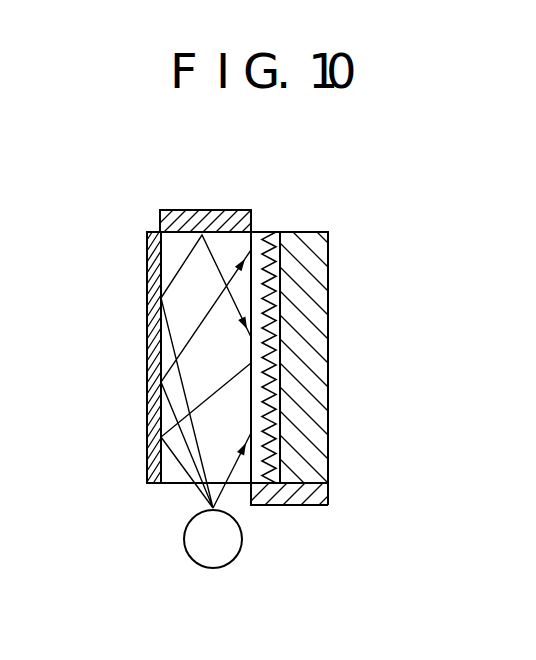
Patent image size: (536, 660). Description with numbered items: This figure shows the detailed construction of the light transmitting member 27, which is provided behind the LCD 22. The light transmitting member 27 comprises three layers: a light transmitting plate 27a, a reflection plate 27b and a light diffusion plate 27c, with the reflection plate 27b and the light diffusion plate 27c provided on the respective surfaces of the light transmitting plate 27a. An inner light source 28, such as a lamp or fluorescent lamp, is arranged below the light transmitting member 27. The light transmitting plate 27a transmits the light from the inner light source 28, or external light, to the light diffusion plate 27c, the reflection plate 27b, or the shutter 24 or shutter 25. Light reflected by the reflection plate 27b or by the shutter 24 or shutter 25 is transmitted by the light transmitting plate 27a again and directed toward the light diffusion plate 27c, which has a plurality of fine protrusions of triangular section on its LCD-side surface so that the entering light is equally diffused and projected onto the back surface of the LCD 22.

The LCD 22 is at (330, 318).
The shutter 24 is at (218, 214).
The shutter 25 is at (330, 488).
The light transmitting member 27 is at (136, 403).
The light transmitting plate 27a is at (172, 342).
The reflection plate 27b is at (147, 272).
The light diffusion plate 27c is at (273, 240).
The inner light source 28 is at (243, 543).